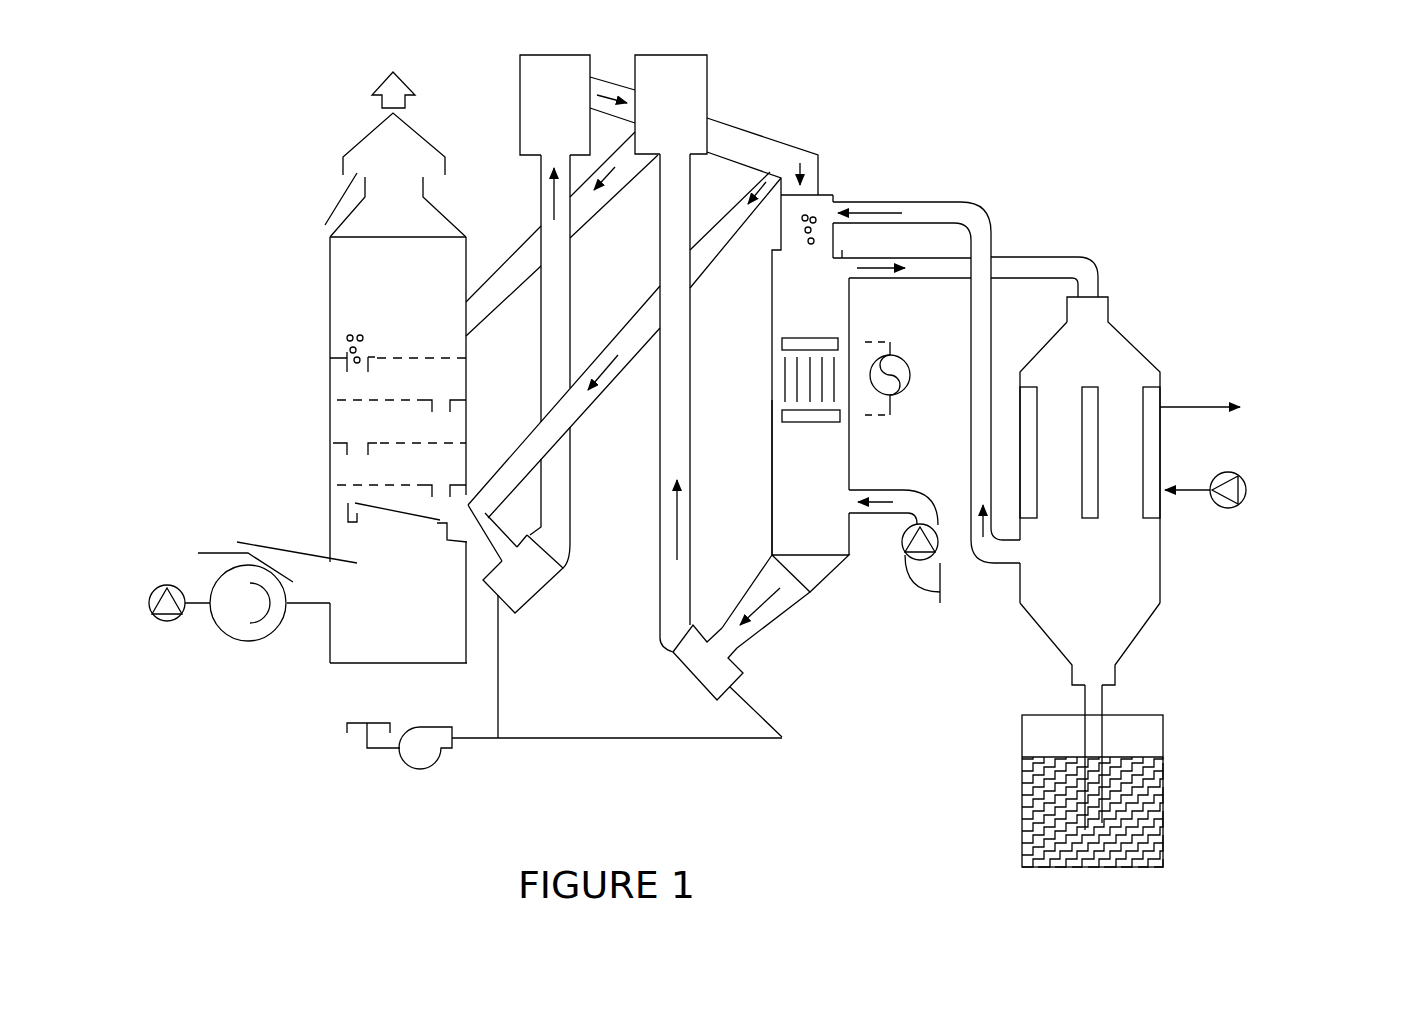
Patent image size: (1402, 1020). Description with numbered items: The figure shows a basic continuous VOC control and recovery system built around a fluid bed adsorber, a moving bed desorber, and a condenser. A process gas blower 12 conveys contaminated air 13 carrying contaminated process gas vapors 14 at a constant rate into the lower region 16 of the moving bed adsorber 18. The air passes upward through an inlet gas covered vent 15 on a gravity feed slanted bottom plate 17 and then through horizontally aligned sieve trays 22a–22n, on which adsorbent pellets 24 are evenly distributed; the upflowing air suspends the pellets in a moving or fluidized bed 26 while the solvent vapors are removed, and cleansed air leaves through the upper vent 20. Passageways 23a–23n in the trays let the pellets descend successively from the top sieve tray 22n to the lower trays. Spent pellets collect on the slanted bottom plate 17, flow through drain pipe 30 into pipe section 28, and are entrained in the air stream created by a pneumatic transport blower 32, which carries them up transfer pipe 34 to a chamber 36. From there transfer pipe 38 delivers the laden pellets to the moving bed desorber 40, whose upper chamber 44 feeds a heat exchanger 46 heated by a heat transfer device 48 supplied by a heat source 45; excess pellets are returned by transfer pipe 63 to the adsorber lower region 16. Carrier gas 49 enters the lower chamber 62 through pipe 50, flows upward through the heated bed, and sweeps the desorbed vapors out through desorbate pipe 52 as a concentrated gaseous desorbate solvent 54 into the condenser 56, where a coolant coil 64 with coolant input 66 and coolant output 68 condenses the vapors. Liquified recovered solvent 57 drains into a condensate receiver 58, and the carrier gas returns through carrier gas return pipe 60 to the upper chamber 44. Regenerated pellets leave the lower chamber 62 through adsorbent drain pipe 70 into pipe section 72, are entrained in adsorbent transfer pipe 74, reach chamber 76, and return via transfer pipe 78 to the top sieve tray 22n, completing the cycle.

The process gas blower 12 is at (205, 630).
The contaminated air 13 is at (231, 562).
The contaminated process gas vapors 14 is at (282, 545).
The inlet gas covered vent 15 is at (422, 517).
The lower region 16 is at (333, 640).
The gravity feed slanted bottom plate 17 is at (347, 518).
The moving bed adsorber 18 is at (322, 453).
The upper vent 20 is at (325, 227).
The sieve tray 22a is at (333, 485).
The sieve tray 22n is at (440, 357).
The passageway 23a is at (442, 487).
The passageway 23n is at (347, 365).
The adsorbent pellets 24 is at (330, 330).
The moving or fluidized bed 26 is at (407, 443).
The pipe section 28 is at (540, 595).
The drain pipe 30 is at (490, 542).
The pneumatic transport blower 32 is at (450, 757).
The transfer pipe 34 is at (572, 482).
The chamber 36 is at (520, 120).
The transfer pipe 38 is at (603, 77).
The moving bed desorber 40 is at (850, 183).
The upper chamber 44 is at (838, 199).
The heat source 45 is at (897, 395).
The heat exchanger 46 is at (845, 250).
The heat transfer device 48 is at (768, 362).
The carrier gas 49 is at (940, 600).
The pipe 50 is at (900, 505).
The desorbate pipe 52 is at (900, 280).
The concentrated gaseous desorbate solvent 54 is at (1020, 258).
The condenser 56 is at (1140, 330).
The liquified recovered solvent 57 is at (1122, 622).
The condensate receiver 58 is at (1175, 772).
The carrier gas return pipe 60 is at (973, 205).
The lower chamber 62 is at (773, 503).
The transfer pipe 63 is at (648, 298).
The coolant coil 64 is at (1152, 442).
The coolant input 66 is at (1193, 492).
The coolant output 68 is at (1192, 407).
The adsorbent drain pipe 70 is at (775, 617).
The pipe section 72 is at (688, 672).
The adsorbent transfer pipe 74 is at (690, 430).
The chamber 76 is at (707, 78).
The transfer pipe 78 is at (520, 247).